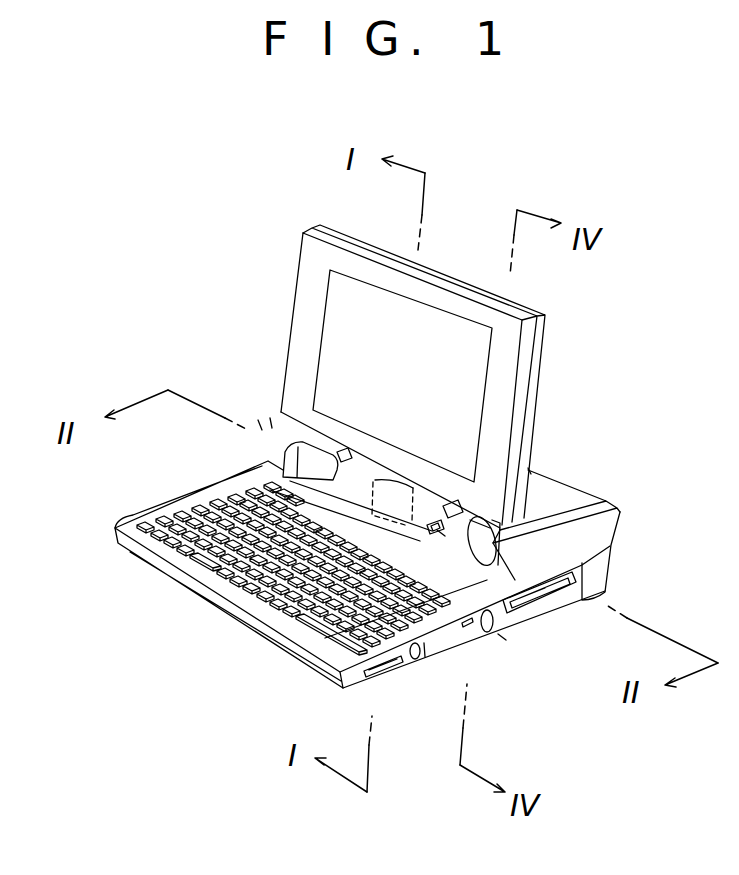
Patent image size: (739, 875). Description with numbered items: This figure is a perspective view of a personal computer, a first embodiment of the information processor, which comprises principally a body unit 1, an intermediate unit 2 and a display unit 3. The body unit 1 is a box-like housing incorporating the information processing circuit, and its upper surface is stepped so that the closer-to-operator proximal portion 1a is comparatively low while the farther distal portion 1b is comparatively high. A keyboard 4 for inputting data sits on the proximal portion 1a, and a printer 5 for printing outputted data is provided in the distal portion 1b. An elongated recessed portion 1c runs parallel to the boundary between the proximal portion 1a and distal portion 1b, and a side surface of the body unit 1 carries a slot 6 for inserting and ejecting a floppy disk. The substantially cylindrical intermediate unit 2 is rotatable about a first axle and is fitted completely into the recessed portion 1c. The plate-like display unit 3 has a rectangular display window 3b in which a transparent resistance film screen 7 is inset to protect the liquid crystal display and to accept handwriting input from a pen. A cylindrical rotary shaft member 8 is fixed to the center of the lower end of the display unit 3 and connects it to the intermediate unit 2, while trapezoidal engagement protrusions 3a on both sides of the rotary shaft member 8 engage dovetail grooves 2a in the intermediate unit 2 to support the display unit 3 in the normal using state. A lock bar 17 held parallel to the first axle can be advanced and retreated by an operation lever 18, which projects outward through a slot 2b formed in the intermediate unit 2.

The body unit 1 is at (610, 565).
The proximal portion 1a is at (258, 420).
The distal portion 1b is at (585, 505).
The recessed portion 1c is at (270, 418).
The intermediate unit 2 is at (223, 480).
The dovetail grooves 2a is at (344, 450).
The slot 2b is at (435, 528).
The display unit 3 is at (543, 368).
The engagement protrusions 3a is at (305, 481).
The display window 3b is at (487, 360).
The keyboard 4 is at (247, 563).
The printer 5 is at (532, 472).
The slot 6 is at (540, 600).
The resistance film screen 7 is at (340, 307).
The rotary shaft member 8 is at (385, 478).
The lock bar 17 is at (503, 640).
The operation lever 18 is at (433, 523).